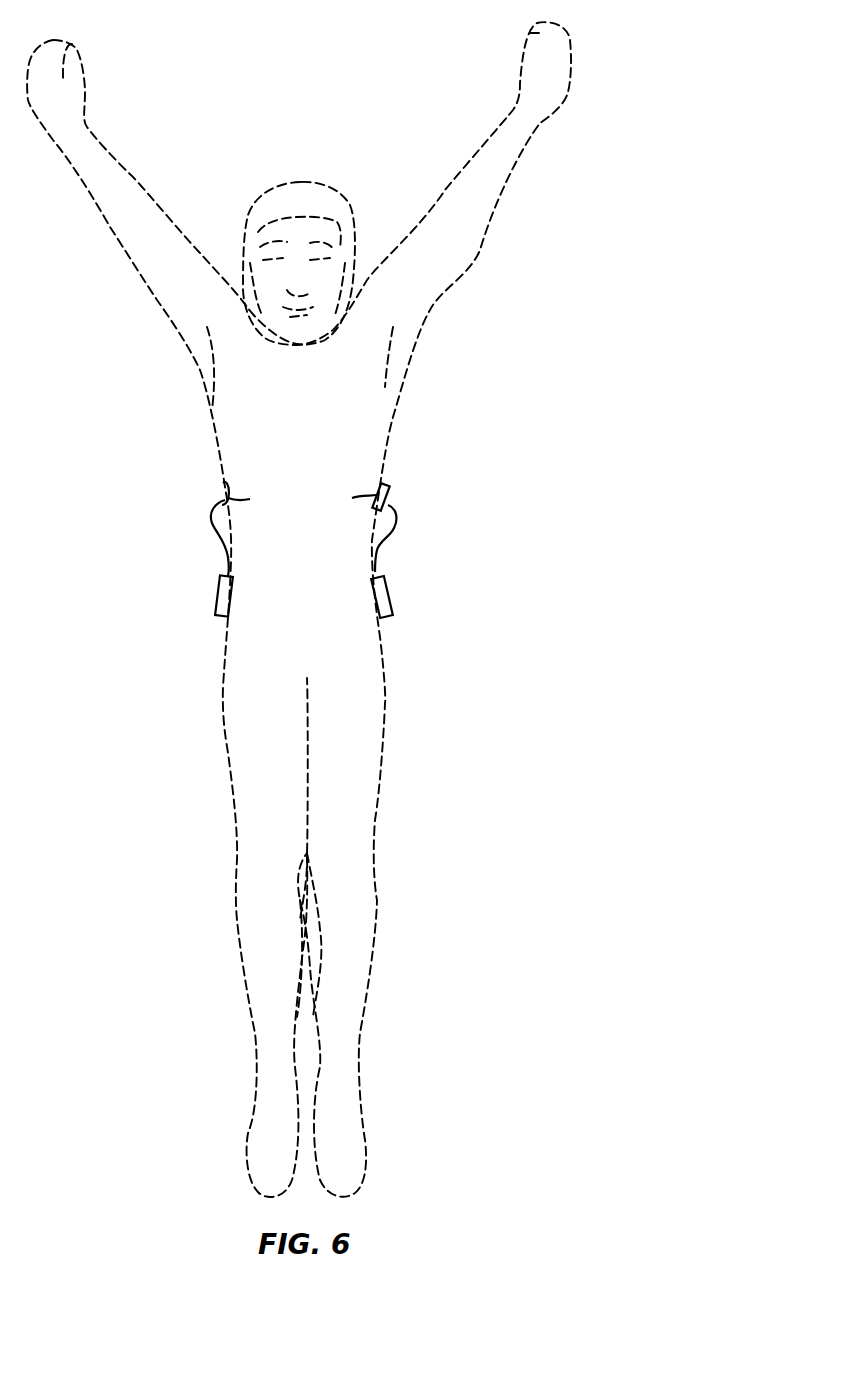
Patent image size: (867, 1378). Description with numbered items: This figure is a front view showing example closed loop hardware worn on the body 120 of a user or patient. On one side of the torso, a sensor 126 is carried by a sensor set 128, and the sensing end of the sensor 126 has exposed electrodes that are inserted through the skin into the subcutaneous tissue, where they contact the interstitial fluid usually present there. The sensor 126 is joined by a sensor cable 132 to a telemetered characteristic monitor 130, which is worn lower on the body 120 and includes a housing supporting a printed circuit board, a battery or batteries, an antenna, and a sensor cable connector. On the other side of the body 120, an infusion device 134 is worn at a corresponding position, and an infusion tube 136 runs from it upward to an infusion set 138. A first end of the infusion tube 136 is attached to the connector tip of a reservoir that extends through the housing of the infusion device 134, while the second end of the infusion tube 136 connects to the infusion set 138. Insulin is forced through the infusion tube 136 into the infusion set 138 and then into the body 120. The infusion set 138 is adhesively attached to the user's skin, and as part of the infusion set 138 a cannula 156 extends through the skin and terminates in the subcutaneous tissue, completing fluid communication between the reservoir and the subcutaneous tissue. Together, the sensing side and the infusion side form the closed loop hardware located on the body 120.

The body 120 is at (438, 348).
The sensor 126 is at (243, 498).
The sensor set 128 is at (222, 487).
The sensor cable 132 is at (210, 513).
The telemetered characteristic monitor 130 is at (216, 593).
The cannula 156 is at (360, 497).
The infusion set 138 is at (388, 482).
The infusion tube 136 is at (398, 513).
The infusion device 134 is at (390, 590).